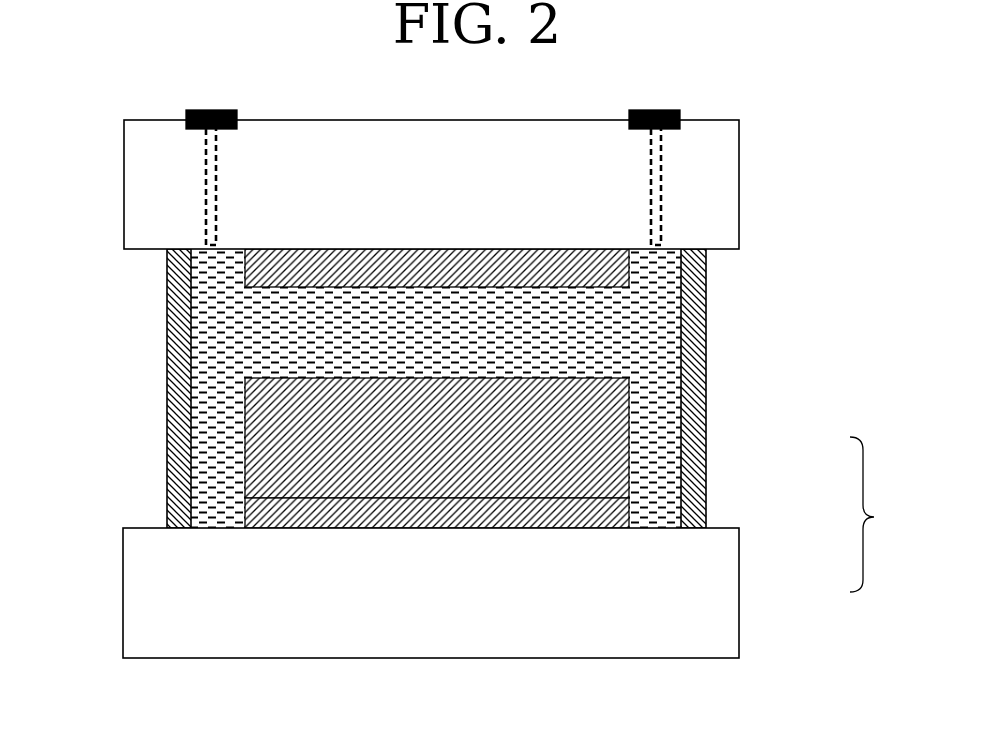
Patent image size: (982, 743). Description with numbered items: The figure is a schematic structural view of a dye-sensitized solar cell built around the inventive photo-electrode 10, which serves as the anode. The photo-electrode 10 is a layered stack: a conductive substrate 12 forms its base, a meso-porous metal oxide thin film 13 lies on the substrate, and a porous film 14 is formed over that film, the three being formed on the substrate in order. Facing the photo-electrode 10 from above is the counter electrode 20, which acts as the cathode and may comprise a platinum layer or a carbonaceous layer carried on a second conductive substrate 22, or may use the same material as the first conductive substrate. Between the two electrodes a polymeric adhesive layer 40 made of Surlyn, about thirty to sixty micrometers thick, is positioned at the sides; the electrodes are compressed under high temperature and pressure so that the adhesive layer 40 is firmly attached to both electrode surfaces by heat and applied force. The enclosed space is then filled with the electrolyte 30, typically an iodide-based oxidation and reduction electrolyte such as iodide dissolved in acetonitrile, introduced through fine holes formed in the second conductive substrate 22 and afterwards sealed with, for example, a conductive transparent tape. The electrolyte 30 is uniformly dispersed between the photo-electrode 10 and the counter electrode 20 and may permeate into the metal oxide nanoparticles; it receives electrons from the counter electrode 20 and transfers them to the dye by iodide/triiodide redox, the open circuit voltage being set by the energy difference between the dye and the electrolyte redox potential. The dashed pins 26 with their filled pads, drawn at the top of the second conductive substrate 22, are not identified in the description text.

The photo-electrode 10 is at (884, 514).
The conductive substrate 12 is at (159, 623).
The meso-porous metal oxide thin film 13 is at (236, 517).
The porous film 14 is at (236, 452).
The counter electrode 20 is at (237, 268).
The second conductive substrate 22 is at (169, 210).
The electrode pin 26 is at (197, 160).
The electrolyte 30 is at (232, 357).
The polymeric adhesive layer 40 is at (158, 407).